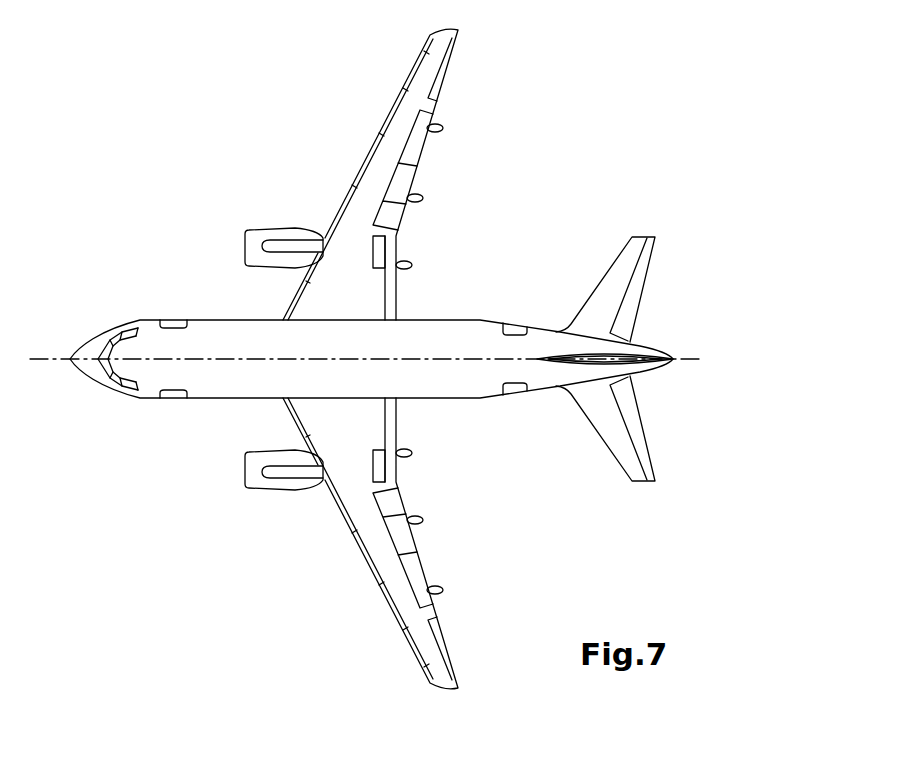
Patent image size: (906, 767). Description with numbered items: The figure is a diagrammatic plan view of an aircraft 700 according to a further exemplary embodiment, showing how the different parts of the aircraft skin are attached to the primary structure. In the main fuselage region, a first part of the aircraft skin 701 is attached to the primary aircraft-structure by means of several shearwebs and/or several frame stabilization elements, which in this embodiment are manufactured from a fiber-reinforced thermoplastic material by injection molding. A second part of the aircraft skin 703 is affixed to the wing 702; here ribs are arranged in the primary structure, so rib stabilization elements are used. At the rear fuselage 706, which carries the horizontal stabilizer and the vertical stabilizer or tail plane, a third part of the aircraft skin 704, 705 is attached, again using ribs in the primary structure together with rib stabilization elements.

The aircraft 700 is at (613, 138).
The first part of the aircraft skin 701 is at (430, 318).
The wing 702 is at (335, 125).
The second part of the aircraft skin 703 is at (423, 86).
The third part of the aircraft skin 704 is at (637, 287).
The third part of the aircraft skin 705 is at (655, 375).
The rear fuselage 706 is at (553, 373).